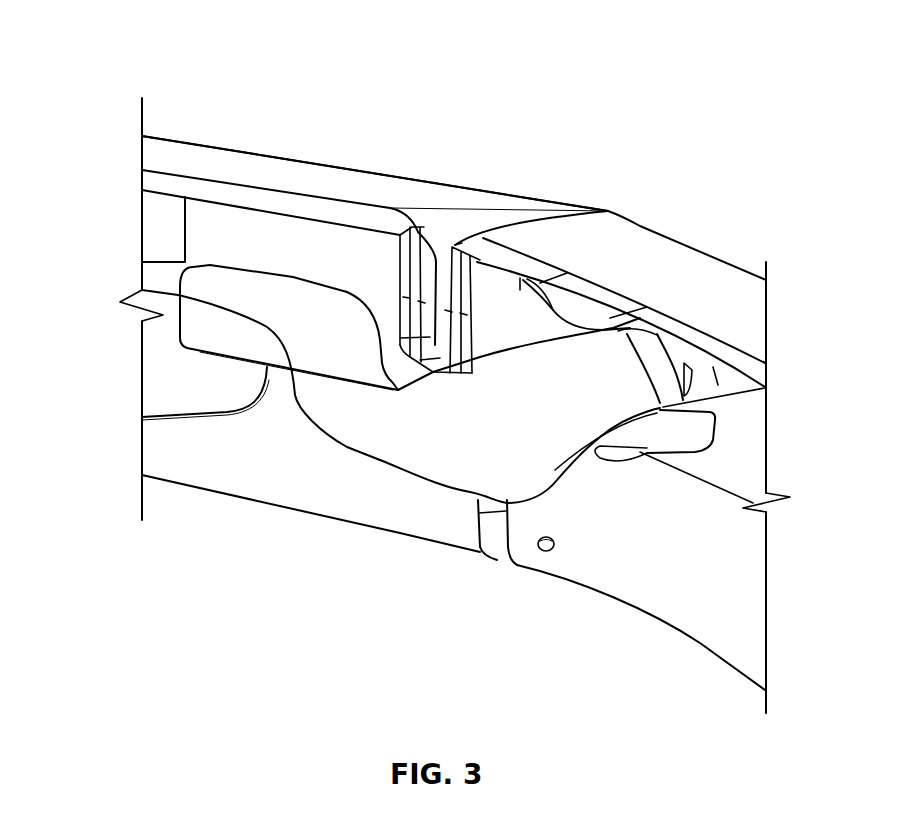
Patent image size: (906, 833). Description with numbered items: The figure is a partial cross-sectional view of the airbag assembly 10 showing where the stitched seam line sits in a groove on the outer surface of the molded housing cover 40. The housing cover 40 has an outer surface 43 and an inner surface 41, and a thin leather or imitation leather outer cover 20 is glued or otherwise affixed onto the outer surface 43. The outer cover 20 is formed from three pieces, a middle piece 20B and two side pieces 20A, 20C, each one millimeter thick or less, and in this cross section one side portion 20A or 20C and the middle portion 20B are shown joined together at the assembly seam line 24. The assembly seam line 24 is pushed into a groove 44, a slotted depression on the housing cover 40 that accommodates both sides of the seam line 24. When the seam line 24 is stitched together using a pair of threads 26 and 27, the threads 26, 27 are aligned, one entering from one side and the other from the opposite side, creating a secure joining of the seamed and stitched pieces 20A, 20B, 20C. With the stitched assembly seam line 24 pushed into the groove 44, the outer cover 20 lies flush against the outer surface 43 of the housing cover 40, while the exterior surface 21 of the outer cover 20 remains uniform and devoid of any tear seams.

The airbag assembly 10 is at (120, 42).
The outer cover 20 is at (165, 152).
The exterior surface 21 is at (227, 147).
The middle piece 20B is at (338, 175).
The side piece 20A is at (662, 247).
The side piece 20C is at (621, 285).
The assembly seam line 24 is at (423, 220).
The outer surface 43 is at (197, 213).
The thread 26 is at (428, 302).
The thread 27 is at (412, 429).
The housing cover 40 is at (185, 440).
The inner surface 41 is at (180, 517).
The groove 44 is at (398, 347).